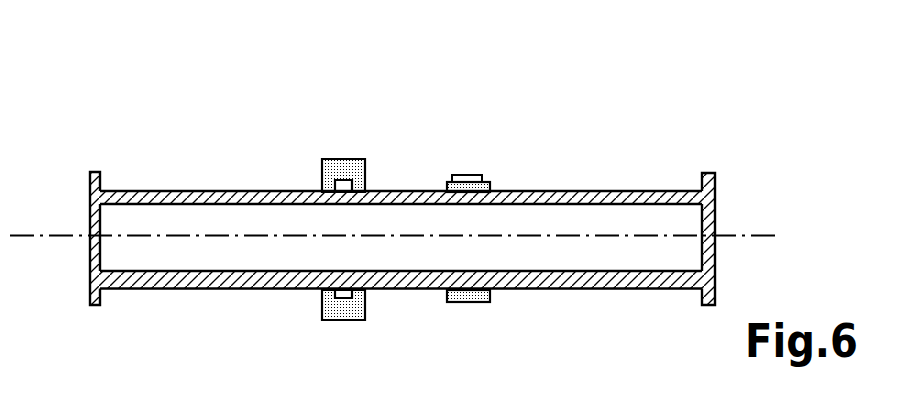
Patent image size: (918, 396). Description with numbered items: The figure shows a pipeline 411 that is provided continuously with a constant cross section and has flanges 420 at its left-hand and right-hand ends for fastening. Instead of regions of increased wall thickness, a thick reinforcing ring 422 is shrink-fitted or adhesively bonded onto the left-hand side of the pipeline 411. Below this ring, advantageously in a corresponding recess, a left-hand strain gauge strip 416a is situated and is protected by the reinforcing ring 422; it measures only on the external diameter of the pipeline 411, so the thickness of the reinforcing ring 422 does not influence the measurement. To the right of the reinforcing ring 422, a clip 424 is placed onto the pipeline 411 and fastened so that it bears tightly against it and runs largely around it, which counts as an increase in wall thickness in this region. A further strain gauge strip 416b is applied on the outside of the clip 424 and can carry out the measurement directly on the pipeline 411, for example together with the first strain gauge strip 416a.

The pipeline 411 is at (186, 125).
The flanges 420 is at (100, 178).
The reinforcing ring 422 is at (342, 158).
The left-hand strain gauge strip 416a is at (343, 188).
The strain gauge strip 416b is at (450, 178).
The clip 424 is at (490, 185).